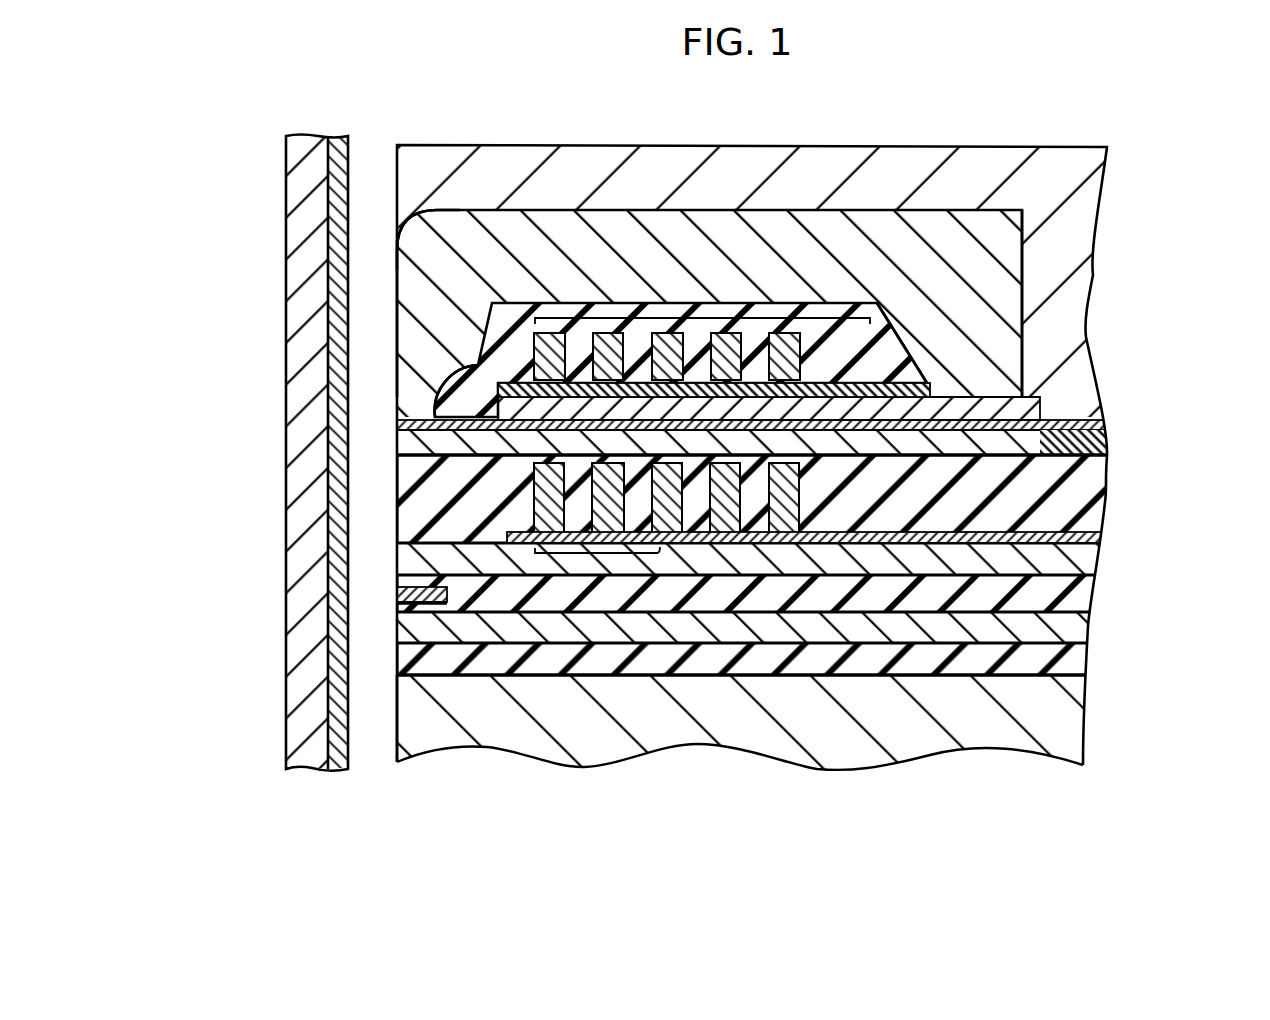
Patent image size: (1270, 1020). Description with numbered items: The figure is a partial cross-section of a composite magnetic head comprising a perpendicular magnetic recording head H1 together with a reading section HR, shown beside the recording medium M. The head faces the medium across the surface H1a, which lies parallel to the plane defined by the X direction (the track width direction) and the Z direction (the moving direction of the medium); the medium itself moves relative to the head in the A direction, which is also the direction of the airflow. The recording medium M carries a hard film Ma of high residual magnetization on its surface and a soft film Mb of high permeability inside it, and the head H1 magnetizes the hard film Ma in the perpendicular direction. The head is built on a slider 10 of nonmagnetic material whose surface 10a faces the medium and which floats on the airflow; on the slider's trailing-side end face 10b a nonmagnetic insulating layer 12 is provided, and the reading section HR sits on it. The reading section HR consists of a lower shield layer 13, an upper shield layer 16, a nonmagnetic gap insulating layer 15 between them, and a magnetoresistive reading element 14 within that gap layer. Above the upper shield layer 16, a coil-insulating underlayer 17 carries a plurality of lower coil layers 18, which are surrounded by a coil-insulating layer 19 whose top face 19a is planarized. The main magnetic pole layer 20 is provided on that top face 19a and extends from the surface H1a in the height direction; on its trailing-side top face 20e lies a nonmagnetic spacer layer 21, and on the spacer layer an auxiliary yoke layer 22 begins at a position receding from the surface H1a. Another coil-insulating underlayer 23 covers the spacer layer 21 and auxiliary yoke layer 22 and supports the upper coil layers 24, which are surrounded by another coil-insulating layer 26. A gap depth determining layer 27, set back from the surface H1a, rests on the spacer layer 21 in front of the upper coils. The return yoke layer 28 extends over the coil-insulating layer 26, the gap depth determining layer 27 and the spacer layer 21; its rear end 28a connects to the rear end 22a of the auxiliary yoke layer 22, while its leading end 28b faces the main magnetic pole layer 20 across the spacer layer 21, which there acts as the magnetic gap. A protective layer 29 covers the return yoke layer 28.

The slider 10 is at (908, 718).
The surface of the slider 10a is at (397, 712).
The end face of the slider 10b is at (737, 677).
The nonmagnetic insulating layer 12 is at (476, 664).
The lower shield layer 13 is at (592, 630).
The reading element 14 is at (420, 602).
The nonmagnetic insulating layer 15 is at (580, 652).
The upper shield layer 16 is at (400, 566).
The coil-insulating underlayer 17 is at (1050, 543).
The lower coil layers 18 is at (660, 558).
The coil-insulating layer 19 is at (953, 505).
The top face of the coil-insulating layer 19a is at (988, 460).
The main magnetic pole layer 20 is at (857, 452).
The top face of the main magnetic pole layer 20e is at (545, 607).
The nonmagnetic spacer layer 21 is at (533, 408).
The auxiliary yoke layer 22 is at (497, 395).
The rear end of the auxiliary yoke layer 22a is at (989, 398).
The coil-insulating underlayer 23 is at (850, 385).
The upper coil layers 24 is at (663, 310).
The coil-insulating layer 26 is at (897, 352).
The gap depth determining layer 27 is at (462, 362).
The return yoke layer 28 is at (767, 255).
The rear end of the return yoke layer 28a is at (961, 248).
The leading end of the return yoke layer 28b is at (417, 330).
The protective layer 29 is at (583, 188).
The surface facing the recording medium H1a is at (400, 298).
The perpendicular magnetic recording head H1 is at (1177, 149).
The reading section HR is at (1177, 551).
The recording medium M is at (270, 477).
The hard film Ma is at (330, 706).
The soft film Mb is at (312, 625).
The A direction A is at (316, 834).
The X direction X is at (1258, 825).
The Z direction Z is at (1188, 818).